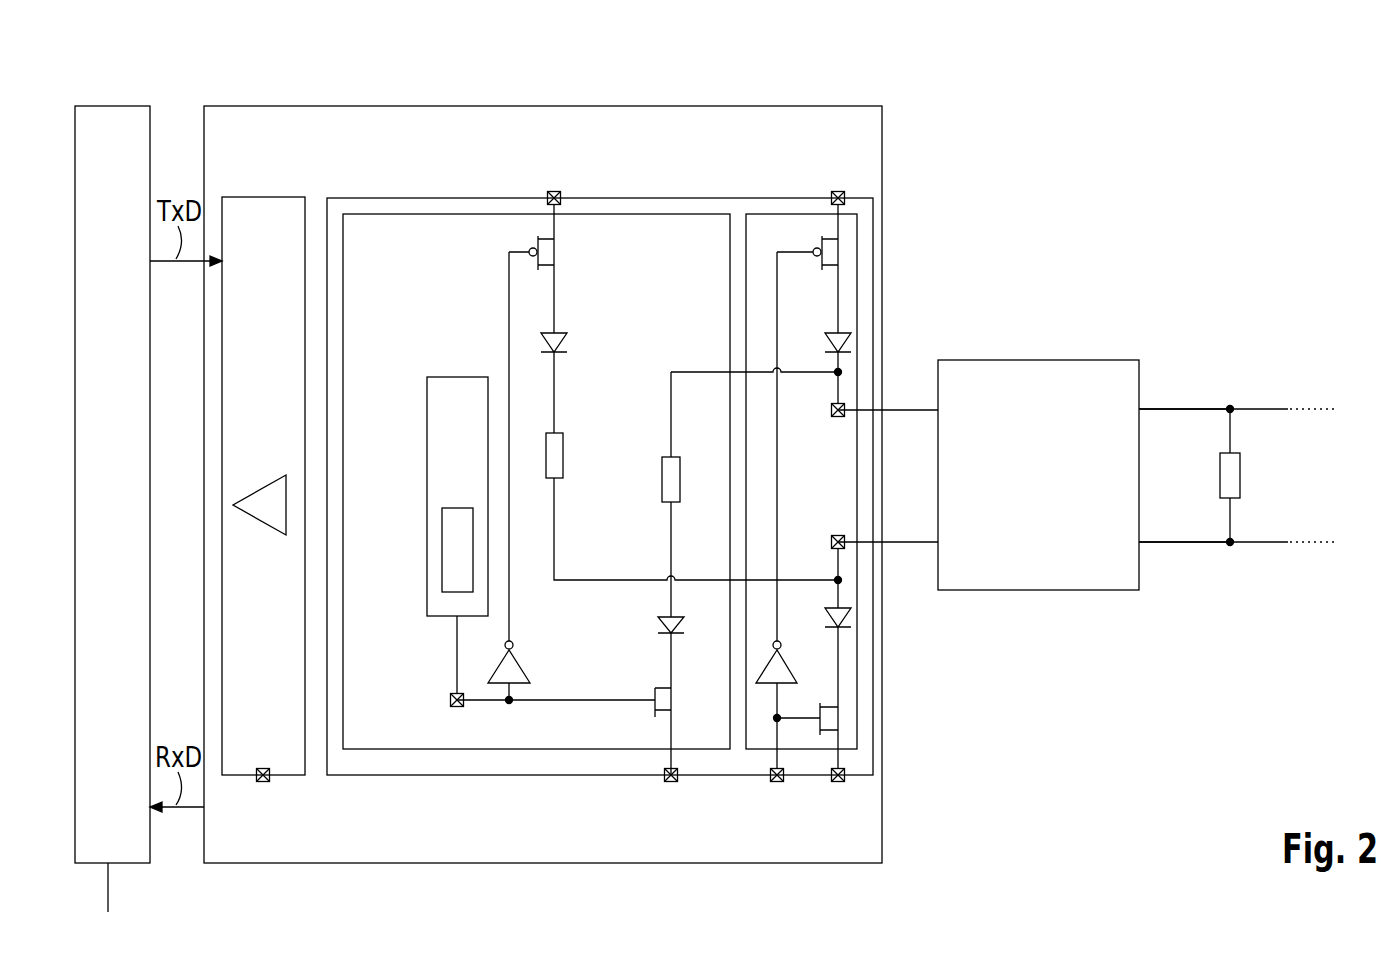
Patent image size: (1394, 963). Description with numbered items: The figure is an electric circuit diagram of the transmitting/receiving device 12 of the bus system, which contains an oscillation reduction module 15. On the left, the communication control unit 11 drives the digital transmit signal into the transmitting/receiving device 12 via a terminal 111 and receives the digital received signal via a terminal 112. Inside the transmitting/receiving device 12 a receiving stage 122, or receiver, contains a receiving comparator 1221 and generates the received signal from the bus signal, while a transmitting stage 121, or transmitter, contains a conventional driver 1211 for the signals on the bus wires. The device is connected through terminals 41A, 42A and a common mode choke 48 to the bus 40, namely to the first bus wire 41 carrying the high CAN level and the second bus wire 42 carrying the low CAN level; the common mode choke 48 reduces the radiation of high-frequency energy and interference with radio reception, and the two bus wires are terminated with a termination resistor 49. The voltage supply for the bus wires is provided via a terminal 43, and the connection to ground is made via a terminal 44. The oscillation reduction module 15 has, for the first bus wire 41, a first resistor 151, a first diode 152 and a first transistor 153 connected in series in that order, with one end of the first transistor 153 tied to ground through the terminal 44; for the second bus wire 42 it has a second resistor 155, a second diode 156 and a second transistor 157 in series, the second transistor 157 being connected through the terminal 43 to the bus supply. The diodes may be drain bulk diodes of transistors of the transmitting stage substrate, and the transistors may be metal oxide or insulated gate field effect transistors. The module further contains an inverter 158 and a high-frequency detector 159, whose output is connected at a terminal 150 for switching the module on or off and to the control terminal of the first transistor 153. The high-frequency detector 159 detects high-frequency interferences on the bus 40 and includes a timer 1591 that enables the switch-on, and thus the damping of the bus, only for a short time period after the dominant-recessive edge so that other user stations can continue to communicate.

The communication control unit 11 is at (110, 106).
The transmitting/receiving device 12 is at (345, 106).
The receiving stage 122 is at (262, 197).
The receiving comparator 1221 is at (256, 490).
The terminal 112 is at (264, 782).
The transmitting stage 121 is at (465, 198).
The oscillation reduction module 15 is at (676, 214).
The driver 1211 is at (783, 214).
The terminal 43 is at (554, 192).
The terminal 44 is at (672, 782).
The terminal 111 is at (778, 782).
The terminal 150 is at (450, 700).
The first resistor 151 is at (660, 488).
The first diode 152 is at (663, 617).
The first transistor 153 is at (655, 688).
The second resistor 155 is at (565, 452).
The second diode 156 is at (565, 334).
The second transistor 157 is at (540, 248).
The inverter 158 is at (520, 668).
The high-frequency detector 159 is at (456, 377).
The timer 1591 is at (442, 552).
The terminal 41A is at (908, 410).
The terminal 42A is at (908, 548).
The common mode choke 48 is at (1040, 590).
The bus 40 is at (1336, 360).
The first bus wire 41 is at (1256, 409).
The second bus wire 42 is at (1256, 545).
The termination resistor 49 is at (1241, 475).